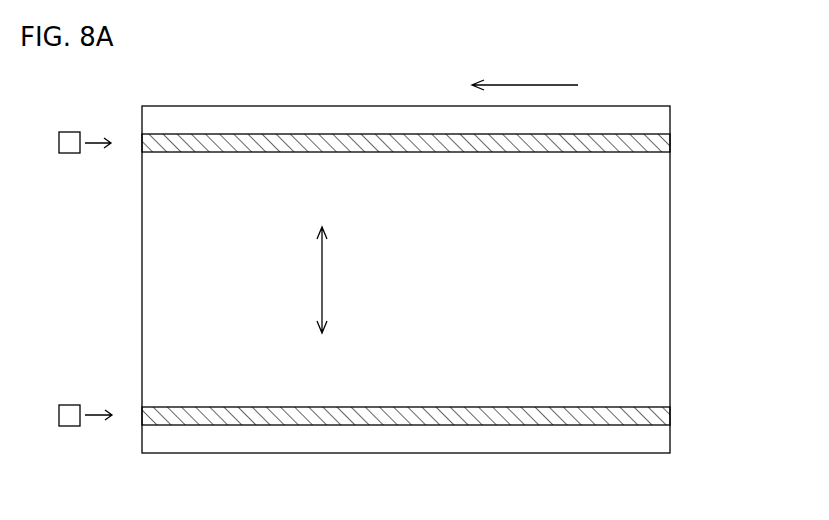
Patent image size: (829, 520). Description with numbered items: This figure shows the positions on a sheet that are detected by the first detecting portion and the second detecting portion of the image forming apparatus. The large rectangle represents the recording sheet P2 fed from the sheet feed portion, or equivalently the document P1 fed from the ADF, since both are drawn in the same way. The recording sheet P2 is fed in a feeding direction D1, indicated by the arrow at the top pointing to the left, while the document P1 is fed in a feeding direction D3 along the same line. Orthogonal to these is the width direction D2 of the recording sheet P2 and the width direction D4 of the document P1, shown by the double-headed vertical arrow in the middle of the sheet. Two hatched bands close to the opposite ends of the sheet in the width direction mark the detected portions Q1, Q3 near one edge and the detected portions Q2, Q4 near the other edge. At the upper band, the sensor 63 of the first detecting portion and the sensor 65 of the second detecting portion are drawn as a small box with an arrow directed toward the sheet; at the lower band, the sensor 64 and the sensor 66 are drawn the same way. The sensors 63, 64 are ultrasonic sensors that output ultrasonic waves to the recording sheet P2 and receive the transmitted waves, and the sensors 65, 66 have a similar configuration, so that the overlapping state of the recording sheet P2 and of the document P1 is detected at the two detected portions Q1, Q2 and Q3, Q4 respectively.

The sensor 63 is at (78, 120).
The sensor 65 is at (70, 132).
The sensor 64 is at (79, 439).
The sensor 66 is at (70, 427).
The detected portion Q1 is at (406, 110).
The detected portion Q3 is at (284, 134).
The detected portion Q2 is at (406, 451).
The detected portion Q4 is at (280, 425).
The feeding direction D1 is at (525, 76).
The feeding direction D3 is at (525, 76).
The width direction D2 is at (354, 280).
The width direction D4 is at (354, 280).
The recording sheet P2 is at (449, 279).
The document P1 is at (670, 328).